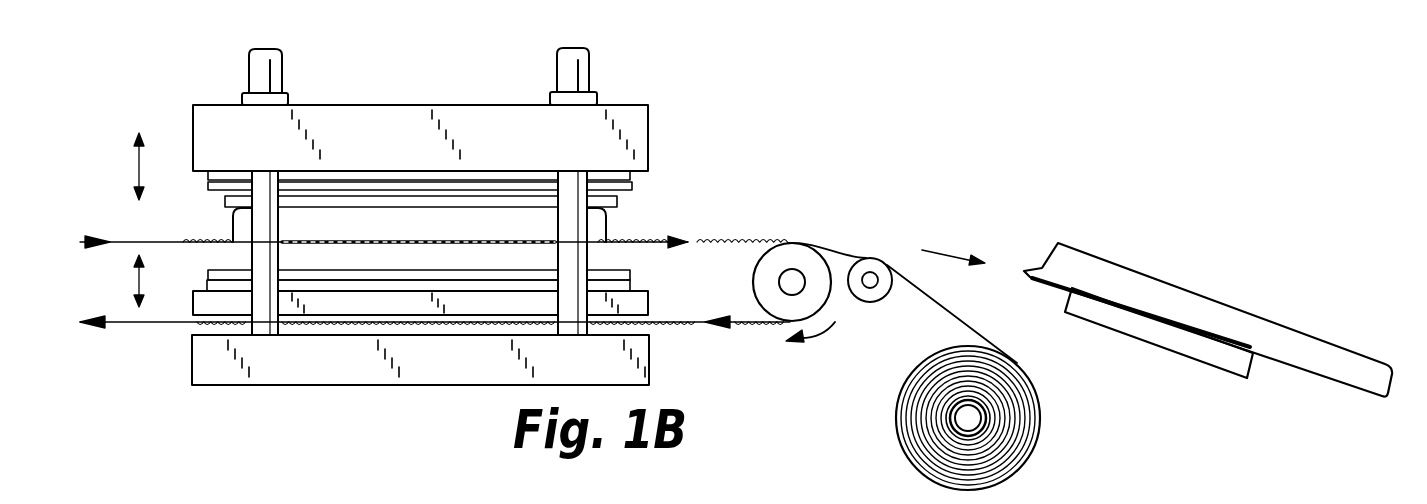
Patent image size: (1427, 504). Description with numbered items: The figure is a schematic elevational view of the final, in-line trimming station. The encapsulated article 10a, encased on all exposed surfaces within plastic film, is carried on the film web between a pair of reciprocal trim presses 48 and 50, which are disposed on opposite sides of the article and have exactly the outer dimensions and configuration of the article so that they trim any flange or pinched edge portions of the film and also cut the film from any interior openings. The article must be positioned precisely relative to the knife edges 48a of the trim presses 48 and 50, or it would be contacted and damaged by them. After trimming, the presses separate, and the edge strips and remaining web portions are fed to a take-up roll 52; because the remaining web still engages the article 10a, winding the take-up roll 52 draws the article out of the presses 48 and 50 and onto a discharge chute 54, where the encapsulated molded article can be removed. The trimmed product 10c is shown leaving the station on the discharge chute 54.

The reciprocal trim press 48 is at (630, 178).
The knife edges 48a is at (617, 205).
The reciprocal trim press 50 is at (623, 280).
The final encapsulated article 10a is at (548, 287).
The formed product 10c is at (1163, 295).
The take-up roll 52 is at (918, 408).
The discharge chute 54 is at (1180, 355).